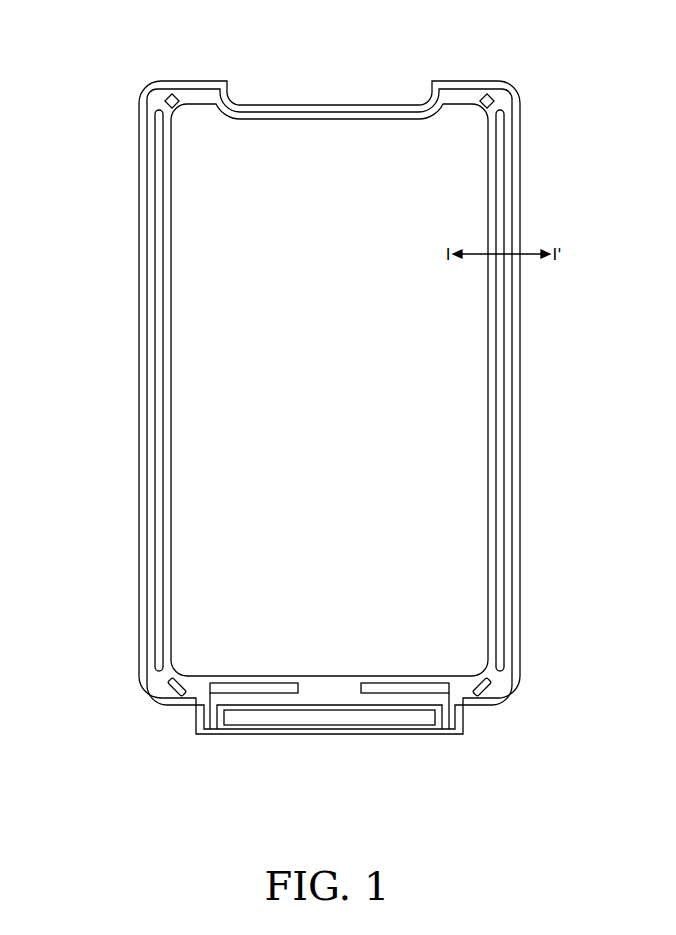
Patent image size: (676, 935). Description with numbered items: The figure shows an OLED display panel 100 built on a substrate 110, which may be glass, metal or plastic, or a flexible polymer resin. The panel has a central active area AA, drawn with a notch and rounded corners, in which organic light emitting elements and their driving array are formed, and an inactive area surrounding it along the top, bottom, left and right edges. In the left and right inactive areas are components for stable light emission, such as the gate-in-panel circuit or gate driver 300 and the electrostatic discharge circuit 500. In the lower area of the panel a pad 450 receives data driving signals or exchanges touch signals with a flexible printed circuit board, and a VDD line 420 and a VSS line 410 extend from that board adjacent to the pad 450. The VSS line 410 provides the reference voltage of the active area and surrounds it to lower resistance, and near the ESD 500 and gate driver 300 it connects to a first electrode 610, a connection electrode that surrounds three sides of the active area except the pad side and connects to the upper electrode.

The OLED display panel 100 is at (503, 31).
The substrate 110 is at (138, 192).
The gate-in-panel circuit 300 is at (155, 379).
The first electrode 610 is at (150, 519).
The electrostatic discharge circuit 500 is at (190, 694).
The low-potential voltage line 410 is at (195, 700).
The high-potential power line 420 is at (297, 694).
The pad 450 is at (339, 731).